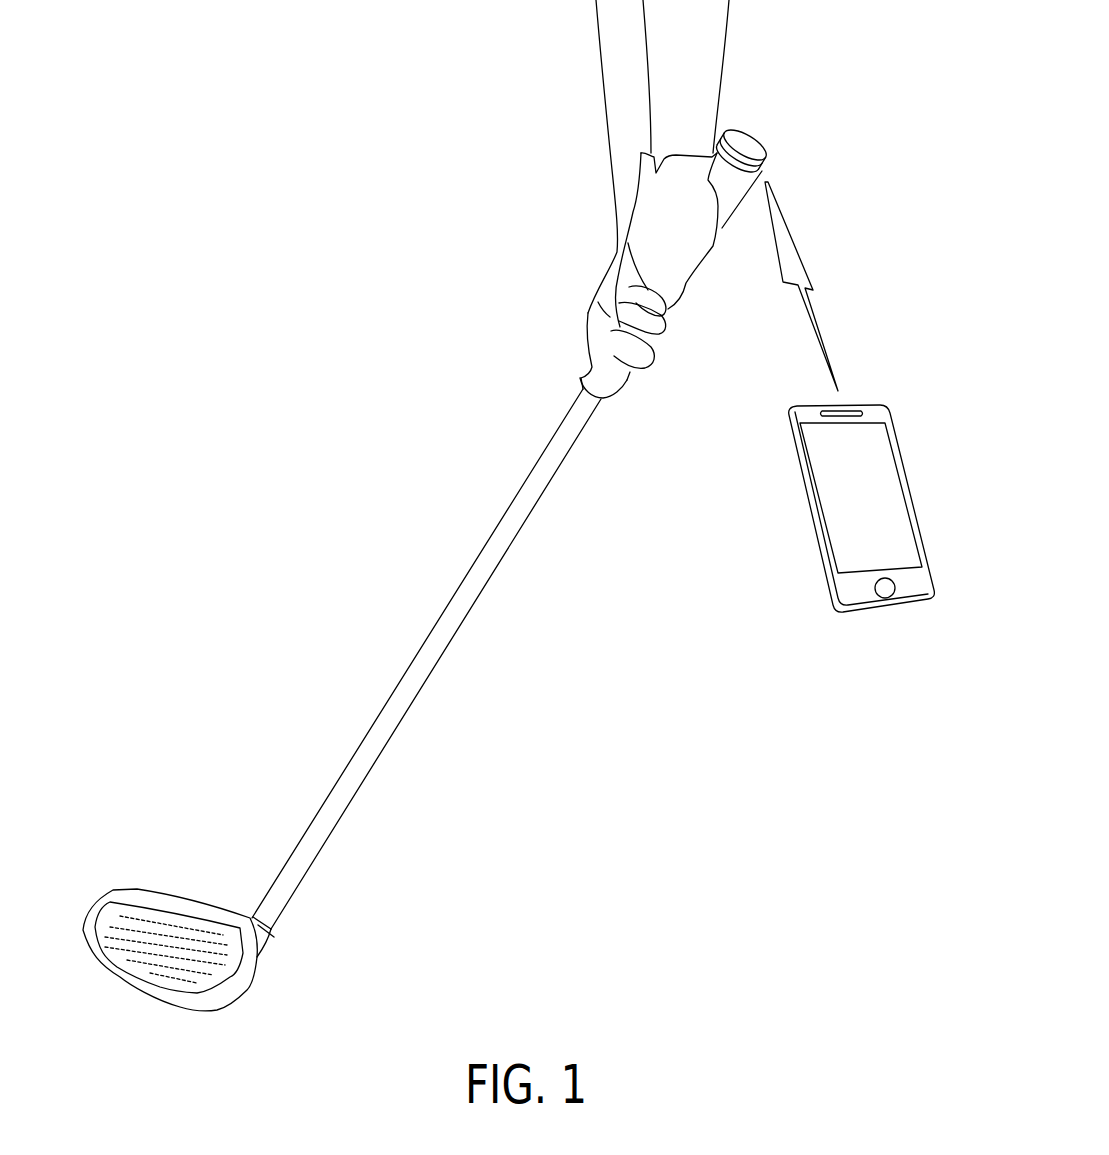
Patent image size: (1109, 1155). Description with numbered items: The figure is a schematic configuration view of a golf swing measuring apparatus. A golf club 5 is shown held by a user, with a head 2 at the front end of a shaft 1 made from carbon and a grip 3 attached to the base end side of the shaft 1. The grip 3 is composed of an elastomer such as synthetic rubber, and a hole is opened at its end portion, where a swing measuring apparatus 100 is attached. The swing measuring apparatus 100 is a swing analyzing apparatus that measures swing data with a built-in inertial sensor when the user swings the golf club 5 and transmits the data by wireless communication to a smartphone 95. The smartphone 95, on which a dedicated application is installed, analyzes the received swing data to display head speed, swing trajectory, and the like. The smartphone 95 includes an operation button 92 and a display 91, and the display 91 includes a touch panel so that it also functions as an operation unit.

The shaft 1 is at (488, 579).
The head 2 is at (168, 905).
The grip 3 is at (727, 200).
The golf club 5 is at (416, 488).
The swing measuring apparatus 100 is at (753, 141).
The display 91 is at (905, 483).
The operation button 92 is at (895, 599).
The smartphone 95 is at (902, 433).